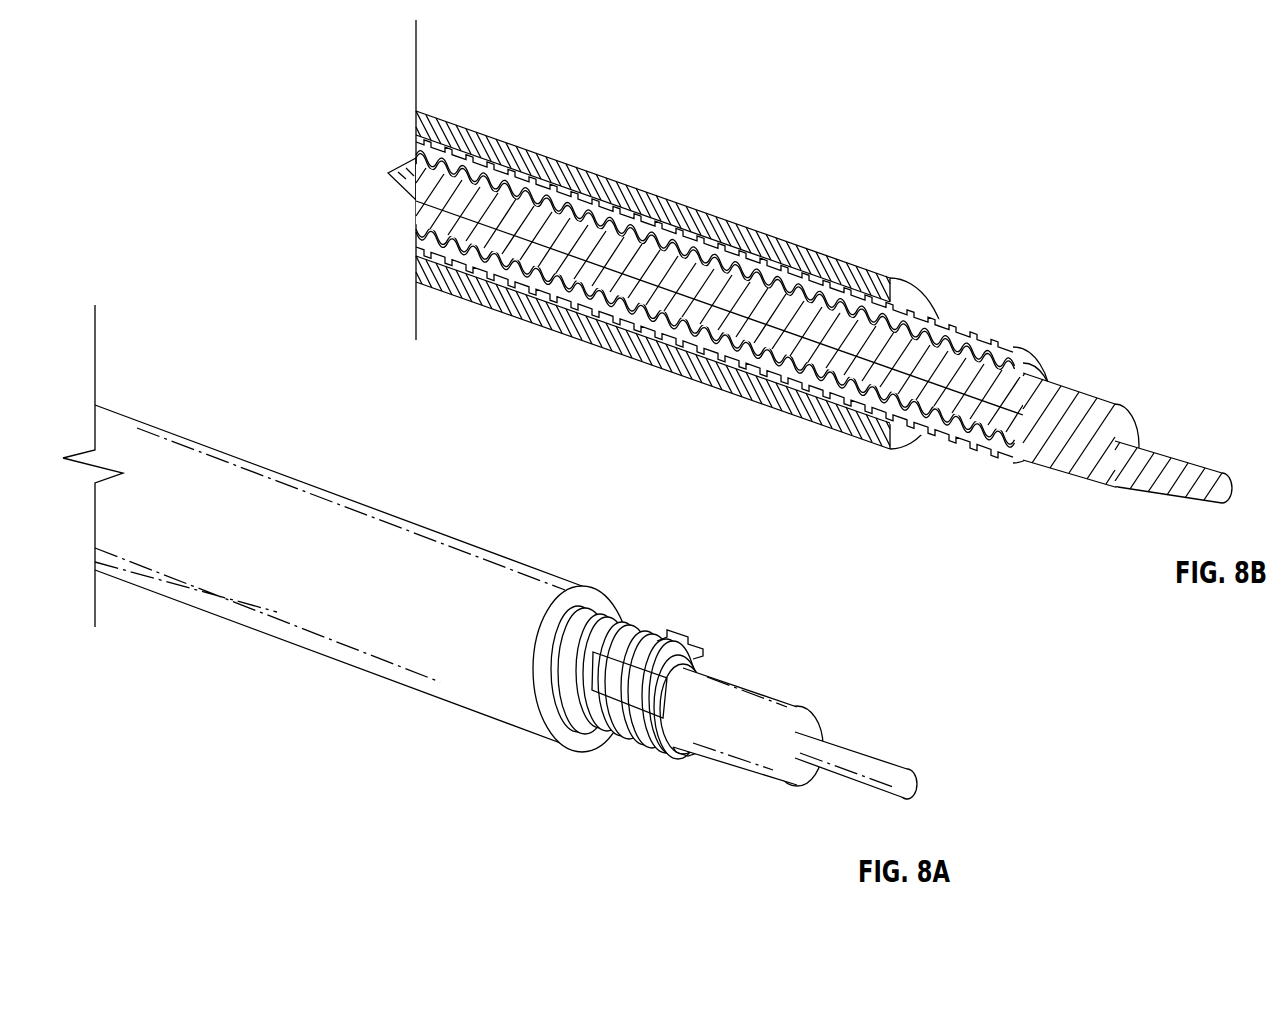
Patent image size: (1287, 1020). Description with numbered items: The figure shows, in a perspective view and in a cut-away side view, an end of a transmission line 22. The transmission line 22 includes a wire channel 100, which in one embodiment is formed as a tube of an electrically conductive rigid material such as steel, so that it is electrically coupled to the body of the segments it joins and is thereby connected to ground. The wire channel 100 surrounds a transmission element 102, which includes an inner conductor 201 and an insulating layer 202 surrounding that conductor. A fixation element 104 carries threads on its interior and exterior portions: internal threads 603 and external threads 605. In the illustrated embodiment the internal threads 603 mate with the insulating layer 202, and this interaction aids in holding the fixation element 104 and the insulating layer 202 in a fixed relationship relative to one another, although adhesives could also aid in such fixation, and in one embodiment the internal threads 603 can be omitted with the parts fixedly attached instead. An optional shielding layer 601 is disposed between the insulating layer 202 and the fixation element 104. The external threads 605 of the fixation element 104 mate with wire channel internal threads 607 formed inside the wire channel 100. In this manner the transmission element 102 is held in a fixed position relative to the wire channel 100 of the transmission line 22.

In FIG. 8A, the wire channel 100 is at (167, 597).
In FIG. 8B, the wire channel 100 is at (557, 312).
In FIG. 8A, the transmission element 102 is at (739, 667).
In FIG. 8A, the fixation element 104 is at (635, 745).
In FIG. 8B, the fixation element 104 is at (490, 270).
In FIG. 8A, the inner conductor 201 is at (870, 757).
In FIG. 8B, the inner conductor 201 is at (483, 218).
In FIG. 8A, the insulating layer 202 is at (770, 690).
In FIG. 8B, the insulating layer 202 is at (430, 217).
In FIG. 8A, the shielding layer 601 is at (594, 686).
In FIG. 8B, the shielding layer 601 is at (420, 235).
In FIG. 8B, the internal threads 603 is at (1000, 447).
In FIG. 8B, the external threads 605 is at (957, 467).
In FIG. 8B, the wire channel internal threads 607 is at (795, 380).
In FIG. 8A, the transmission line 22 is at (549, 520).
In FIG. 8B, the transmission line 22 is at (896, 213).